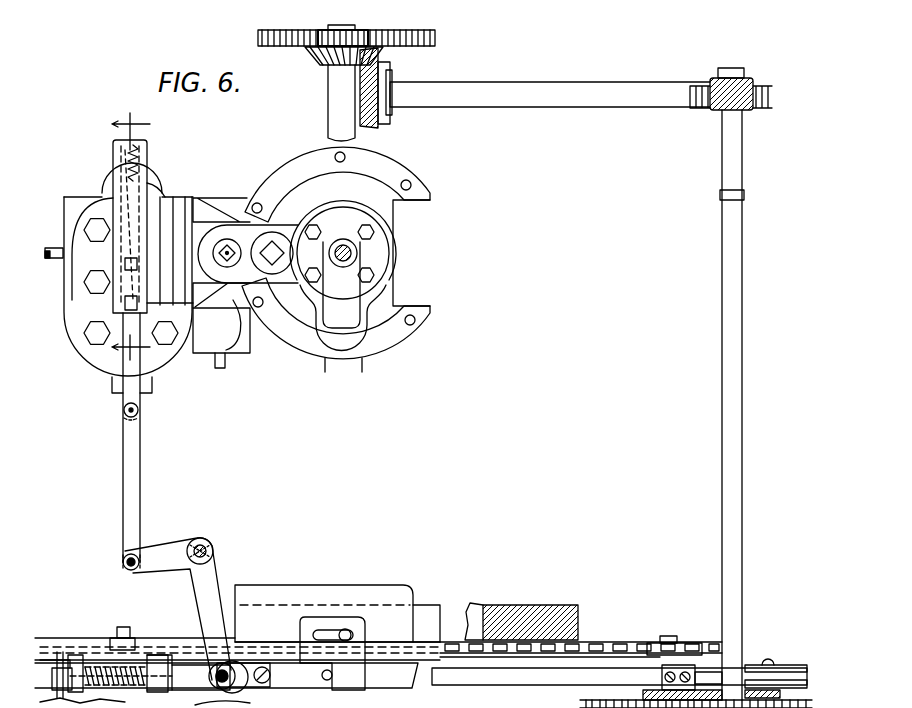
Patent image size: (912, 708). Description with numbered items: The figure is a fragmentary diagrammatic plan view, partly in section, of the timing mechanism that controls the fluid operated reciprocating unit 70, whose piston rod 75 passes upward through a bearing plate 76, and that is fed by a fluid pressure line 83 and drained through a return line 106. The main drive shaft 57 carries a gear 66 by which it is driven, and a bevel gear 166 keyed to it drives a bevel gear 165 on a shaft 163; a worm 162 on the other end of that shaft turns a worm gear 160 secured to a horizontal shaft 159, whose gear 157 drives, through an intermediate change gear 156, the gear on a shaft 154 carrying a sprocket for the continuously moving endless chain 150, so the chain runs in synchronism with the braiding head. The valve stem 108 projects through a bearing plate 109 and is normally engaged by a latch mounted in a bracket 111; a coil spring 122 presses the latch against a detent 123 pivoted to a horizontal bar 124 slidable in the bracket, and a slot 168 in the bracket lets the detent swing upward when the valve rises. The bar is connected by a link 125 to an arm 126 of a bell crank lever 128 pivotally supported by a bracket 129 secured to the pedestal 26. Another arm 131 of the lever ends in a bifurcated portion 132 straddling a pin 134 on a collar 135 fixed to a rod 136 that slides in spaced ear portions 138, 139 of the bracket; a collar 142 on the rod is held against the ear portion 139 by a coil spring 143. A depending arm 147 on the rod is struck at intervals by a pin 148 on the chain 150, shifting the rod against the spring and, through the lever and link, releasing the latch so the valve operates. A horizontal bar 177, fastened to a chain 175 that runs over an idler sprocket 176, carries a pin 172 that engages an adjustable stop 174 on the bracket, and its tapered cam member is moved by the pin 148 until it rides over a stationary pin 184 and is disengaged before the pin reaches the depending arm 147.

The gear 66 is at (438, 38).
The bevel gear 166 is at (386, 52).
The main drive shaft 57 is at (340, 100).
The bevel gear 165 is at (372, 105).
The shaft 163 is at (582, 92).
The worm 162 is at (718, 108).
The worm gear 160 is at (752, 80).
The horizontal shaft 159 is at (722, 420).
The coil spring 122 is at (155, 145).
The valve stem 108 is at (112, 178).
The bracket 111 is at (147, 186).
The slot 168 is at (128, 262).
The fluid pressure line 83 is at (52, 253).
The bearing plate 109 is at (165, 355).
The detent 123 is at (130, 258).
The horizontal bar 124 is at (137, 365).
The return line 106 is at (221, 283).
The fluid operated reciprocating unit 70 is at (284, 352).
The bearing plate 76 is at (386, 268).
The piston rod 75 is at (350, 252).
The link 125 is at (127, 492).
The arm 126 is at (150, 550).
The arm 131 is at (232, 585).
The bell crank lever 128 is at (223, 535).
The bifurcated portion 132 is at (228, 585).
The bracket 129 is at (310, 593).
The pin 172 is at (350, 676).
The adjustable stop 174 is at (385, 675).
The pin 134 is at (232, 618).
The collar 135 is at (232, 658).
The horizontal bar 177 is at (607, 678).
The endless chain 150 is at (593, 640).
The pin 148 is at (540, 655).
The pedestal 26 is at (470, 615).
The shaft 154 is at (672, 640).
The idler sprocket 176 is at (757, 666).
The gear 157 is at (795, 703).
The chain 175 is at (792, 672).
The change gear 156 is at (605, 703).
The arm 147 is at (55, 662).
The ear portion 138 is at (58, 677).
The stationary pin 184 is at (120, 628).
The collar 142 is at (130, 678).
The coil spring 143 is at (122, 668).
The ear portion 139 is at (170, 680).
The rod 136 is at (173, 672).